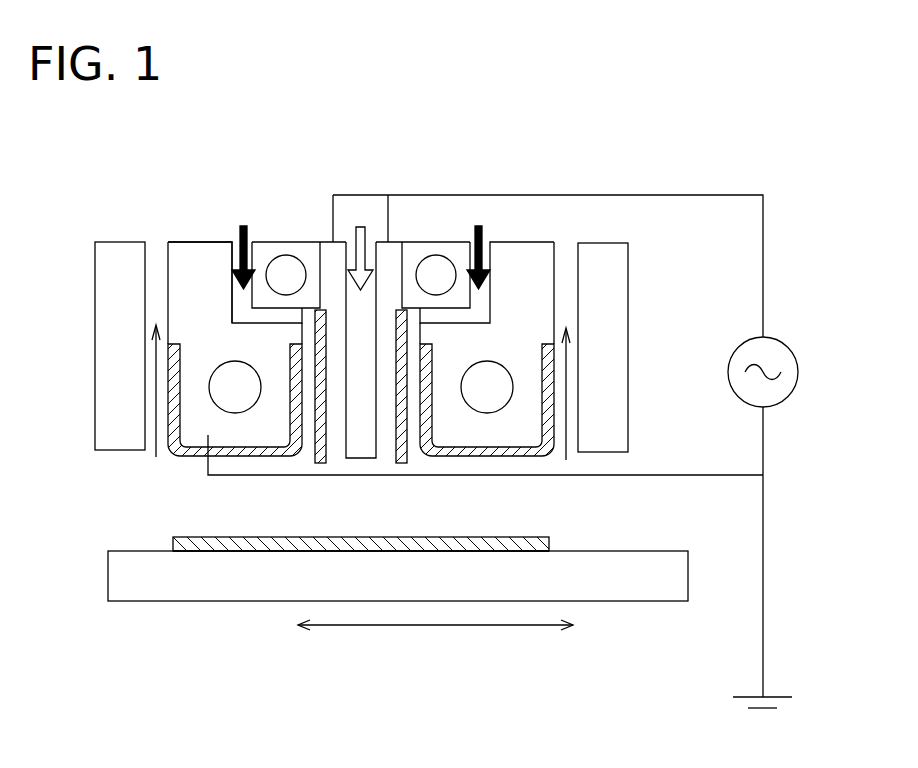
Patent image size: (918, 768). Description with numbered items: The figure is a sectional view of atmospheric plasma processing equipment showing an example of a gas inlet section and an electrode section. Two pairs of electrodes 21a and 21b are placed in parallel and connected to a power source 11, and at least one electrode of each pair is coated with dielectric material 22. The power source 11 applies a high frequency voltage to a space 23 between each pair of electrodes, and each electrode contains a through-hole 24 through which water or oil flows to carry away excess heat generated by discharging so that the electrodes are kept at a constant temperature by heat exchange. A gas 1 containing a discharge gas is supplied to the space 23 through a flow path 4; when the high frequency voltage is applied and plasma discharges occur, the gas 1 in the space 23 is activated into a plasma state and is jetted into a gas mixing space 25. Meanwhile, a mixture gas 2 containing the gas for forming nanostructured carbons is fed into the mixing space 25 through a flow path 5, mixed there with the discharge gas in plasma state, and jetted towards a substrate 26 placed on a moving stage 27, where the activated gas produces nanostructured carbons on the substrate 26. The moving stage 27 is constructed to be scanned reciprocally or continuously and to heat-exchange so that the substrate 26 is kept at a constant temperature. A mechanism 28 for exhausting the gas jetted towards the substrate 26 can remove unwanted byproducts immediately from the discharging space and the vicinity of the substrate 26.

The gas 1 is at (243, 227).
The mixture gas 2 is at (360, 226).
The flow path 4 is at (238, 313).
The flow path 5 is at (360, 408).
The power source 11 is at (798, 374).
The electrode 21a is at (193, 433).
The electrode 21b is at (333, 443).
The dielectric material 22 is at (315, 444).
The space 23 is at (307, 398).
The through-hole 24 is at (497, 378).
The gas mixing space 25 is at (373, 522).
The substrate 26 is at (340, 551).
The moving stage 27 is at (633, 590).
The mechanism 28 is at (568, 304).